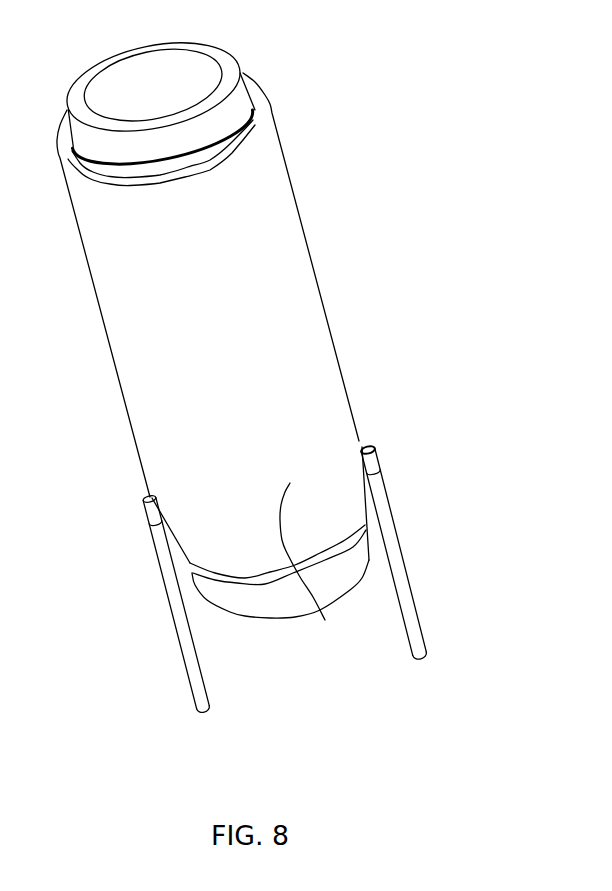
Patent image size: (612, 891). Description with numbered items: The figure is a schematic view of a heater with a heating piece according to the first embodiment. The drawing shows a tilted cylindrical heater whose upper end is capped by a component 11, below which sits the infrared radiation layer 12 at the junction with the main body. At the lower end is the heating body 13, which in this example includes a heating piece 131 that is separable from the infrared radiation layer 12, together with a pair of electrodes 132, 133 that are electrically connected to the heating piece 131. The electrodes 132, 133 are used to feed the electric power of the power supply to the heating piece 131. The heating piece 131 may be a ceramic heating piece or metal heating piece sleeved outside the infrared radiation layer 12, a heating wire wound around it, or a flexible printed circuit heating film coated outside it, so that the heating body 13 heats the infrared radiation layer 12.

The cap 11 is at (225, 62).
The infrared radiation layer 12 is at (257, 116).
The heating body 13 is at (286, 619).
The heating piece 131 is at (325, 620).
The electrode 132 is at (402, 652).
The electrode 133 is at (204, 624).